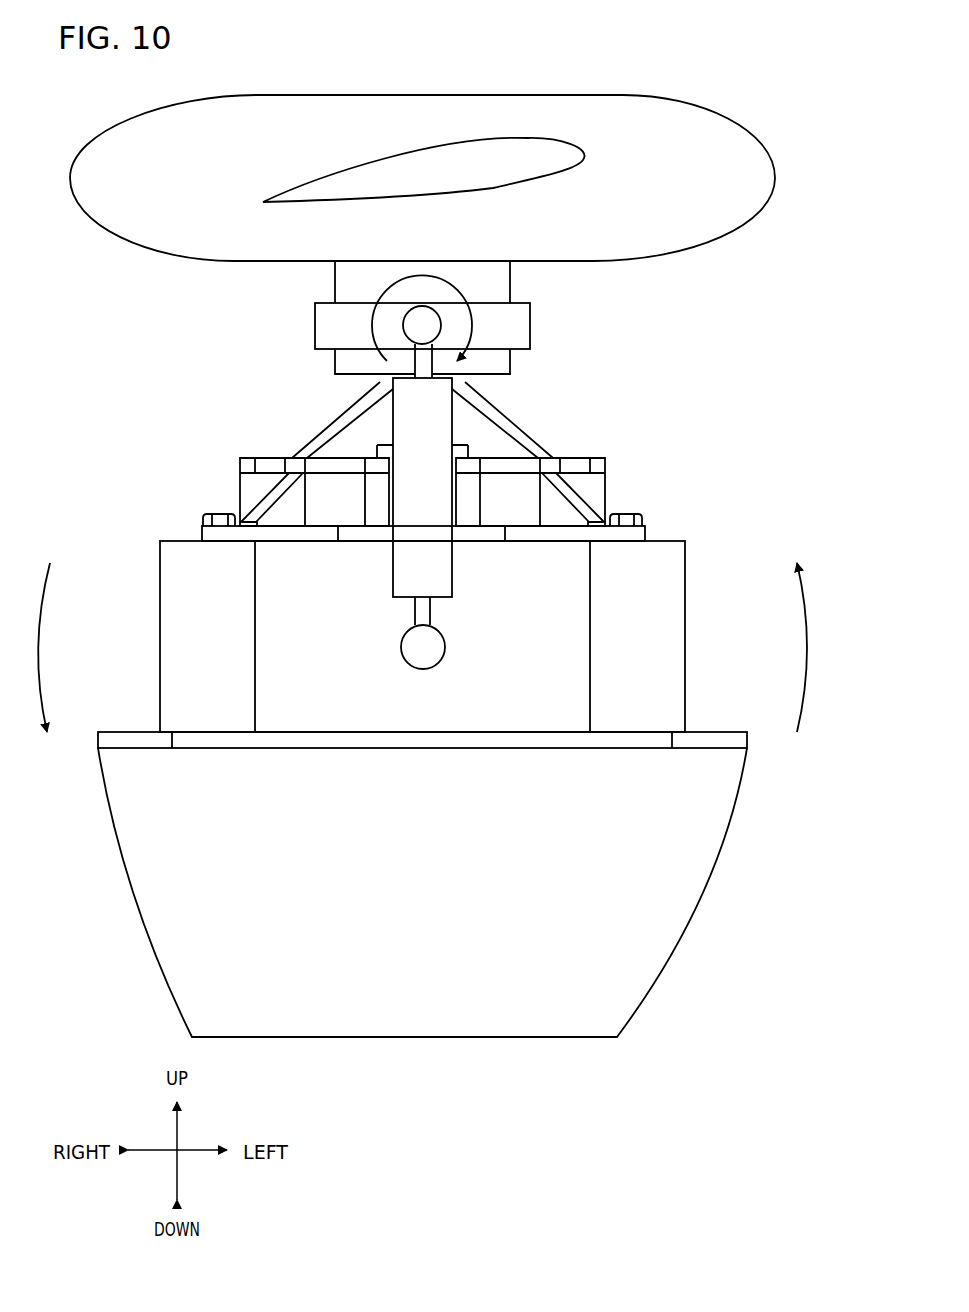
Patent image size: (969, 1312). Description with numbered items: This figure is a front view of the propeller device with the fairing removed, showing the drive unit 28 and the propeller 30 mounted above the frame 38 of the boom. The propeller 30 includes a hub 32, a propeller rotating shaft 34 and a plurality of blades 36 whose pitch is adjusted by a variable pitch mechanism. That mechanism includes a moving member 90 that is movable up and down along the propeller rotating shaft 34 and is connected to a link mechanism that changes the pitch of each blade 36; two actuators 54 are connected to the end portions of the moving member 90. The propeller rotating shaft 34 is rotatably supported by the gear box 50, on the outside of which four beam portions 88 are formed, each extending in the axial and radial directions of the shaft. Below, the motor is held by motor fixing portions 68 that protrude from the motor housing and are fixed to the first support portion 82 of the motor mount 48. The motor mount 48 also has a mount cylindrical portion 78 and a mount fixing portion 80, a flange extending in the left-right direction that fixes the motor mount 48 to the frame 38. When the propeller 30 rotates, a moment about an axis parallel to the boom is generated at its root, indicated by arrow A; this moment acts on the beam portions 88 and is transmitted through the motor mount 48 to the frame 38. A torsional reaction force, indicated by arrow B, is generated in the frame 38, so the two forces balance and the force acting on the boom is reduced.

The drive unit 28 is at (180, 355).
The propeller 30 is at (573, 78).
The hub 32 is at (333, 95).
The propeller rotating shaft 34 is at (510, 287).
The blade 36 is at (483, 155).
The frame 38 is at (647, 913).
The motor mount 48 is at (702, 623).
The gear box 50 is at (565, 437).
The actuator 54 is at (438, 570).
The motor fixing portion 68 is at (198, 537).
The mount cylindrical portion 78 is at (685, 598).
The mount fixing portion 80 is at (717, 732).
The first support portion 82 is at (185, 536).
The beam portion 88 is at (327, 425).
The moving member 90 is at (512, 325).
The arrow A is at (368, 322).
The arrow B is at (50, 585).